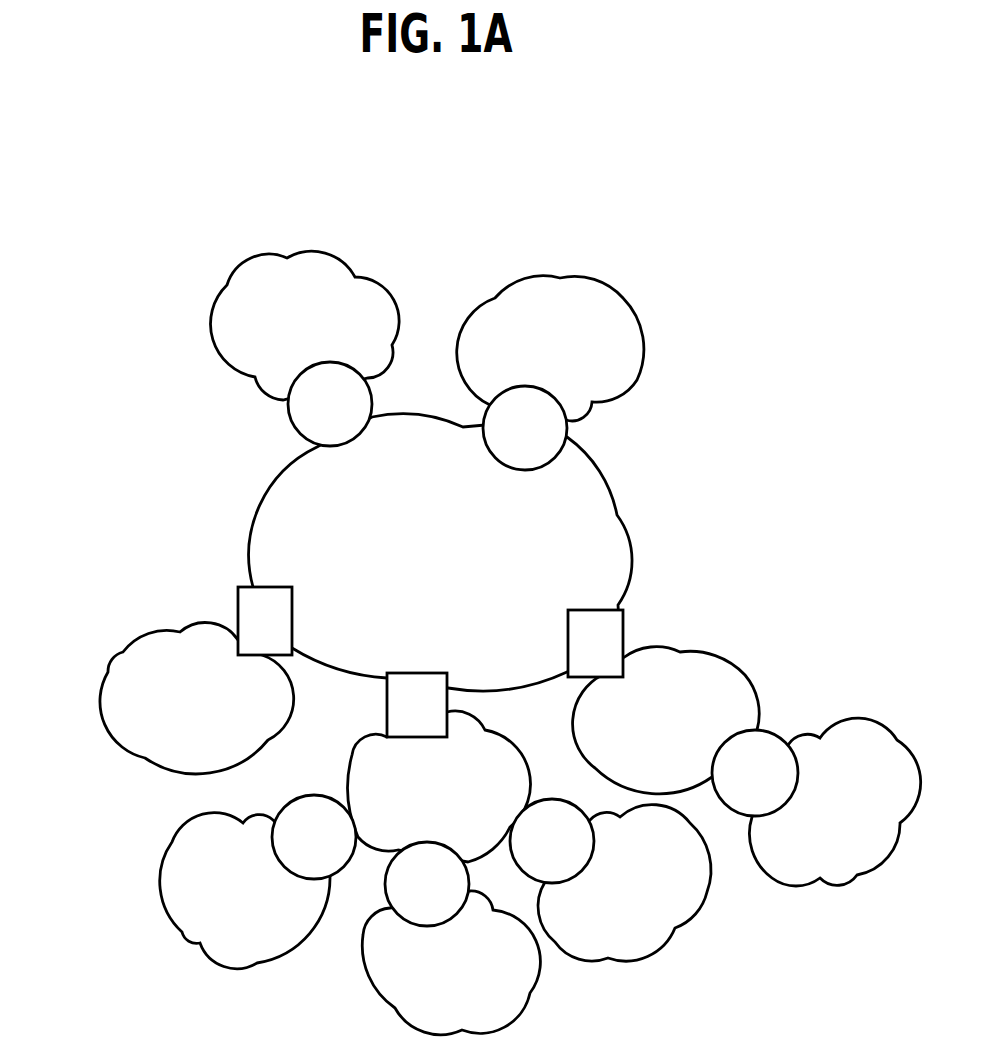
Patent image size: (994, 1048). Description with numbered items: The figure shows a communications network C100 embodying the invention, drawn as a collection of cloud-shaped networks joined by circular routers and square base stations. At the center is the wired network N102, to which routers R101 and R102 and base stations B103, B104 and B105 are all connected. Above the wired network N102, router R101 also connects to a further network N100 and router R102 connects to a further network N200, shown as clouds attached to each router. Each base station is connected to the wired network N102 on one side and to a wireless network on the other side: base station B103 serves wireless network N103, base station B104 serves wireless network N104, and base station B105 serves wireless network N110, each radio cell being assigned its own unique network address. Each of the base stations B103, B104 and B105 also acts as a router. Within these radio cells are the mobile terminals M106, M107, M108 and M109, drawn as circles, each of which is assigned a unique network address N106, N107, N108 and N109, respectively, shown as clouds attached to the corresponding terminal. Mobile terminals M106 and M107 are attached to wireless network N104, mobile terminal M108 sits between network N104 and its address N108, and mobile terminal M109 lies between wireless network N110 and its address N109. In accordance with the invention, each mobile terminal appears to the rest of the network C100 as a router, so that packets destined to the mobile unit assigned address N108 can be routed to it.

The communications network C100 is at (172, 380).
The network N100 is at (305, 325).
The network N200 is at (550, 348).
The wired network N102 is at (440, 552).
The wireless network N103 is at (197, 698).
The wireless network N104 is at (439, 786).
The network address N106 is at (245, 891).
The network address N107 is at (451, 963).
The network address N108 is at (624, 883).
The network address N109 is at (834, 802).
The wireless network N110 is at (666, 720).
The router R101 is at (287, 417).
The router R102 is at (568, 427).
The base station B103 is at (237, 598).
The base station B104 is at (384, 702).
The base station B105 is at (625, 635).
The mobile terminal M106 is at (290, 802).
The mobile terminal M107 is at (385, 885).
The mobile terminal M108 is at (560, 798).
The mobile terminal M109 is at (773, 733).